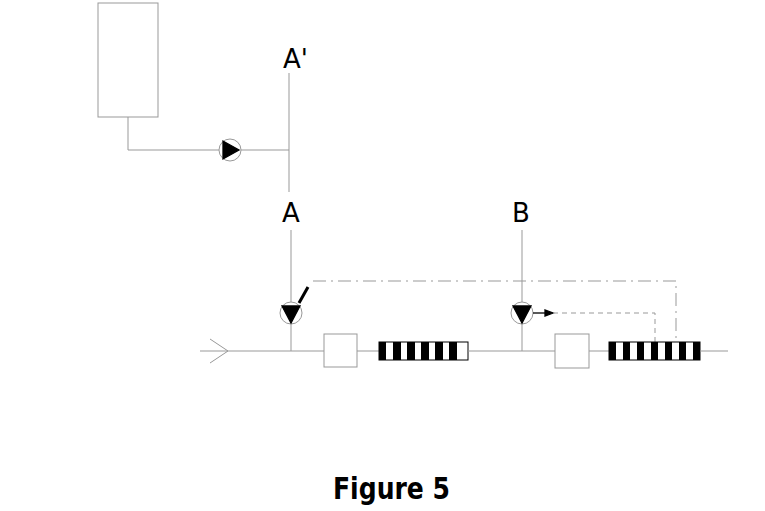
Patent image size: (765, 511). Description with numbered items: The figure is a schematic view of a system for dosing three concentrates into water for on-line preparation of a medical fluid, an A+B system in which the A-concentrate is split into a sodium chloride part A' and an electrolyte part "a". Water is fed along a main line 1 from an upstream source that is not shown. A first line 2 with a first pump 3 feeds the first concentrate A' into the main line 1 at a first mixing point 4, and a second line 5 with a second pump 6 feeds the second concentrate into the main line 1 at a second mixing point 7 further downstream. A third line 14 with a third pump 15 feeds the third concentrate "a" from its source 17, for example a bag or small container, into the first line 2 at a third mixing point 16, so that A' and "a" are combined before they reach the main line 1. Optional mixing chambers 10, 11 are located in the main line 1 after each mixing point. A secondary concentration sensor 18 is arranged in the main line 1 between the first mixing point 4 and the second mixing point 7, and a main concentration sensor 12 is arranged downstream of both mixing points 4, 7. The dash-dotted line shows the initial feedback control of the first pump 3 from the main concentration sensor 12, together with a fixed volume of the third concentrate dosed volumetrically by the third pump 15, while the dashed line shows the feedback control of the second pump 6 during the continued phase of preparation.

The main line 1 is at (252, 353).
The first line 2 is at (293, 183).
The first pump 3 is at (283, 306).
The first mixing point 4 is at (290, 356).
The second line 5 is at (523, 261).
The second pump 6 is at (510, 312).
The second mixing point 7 is at (520, 353).
The mixing chamber 10 is at (338, 368).
The mixing chamber 11 is at (569, 369).
The main concentration sensor 12 is at (648, 362).
The third line 14 is at (186, 150).
The third pump 15 is at (233, 162).
The third mixing point 16 is at (292, 152).
The source 17 is at (104, 61).
The secondary concentration sensor 18 is at (415, 362).